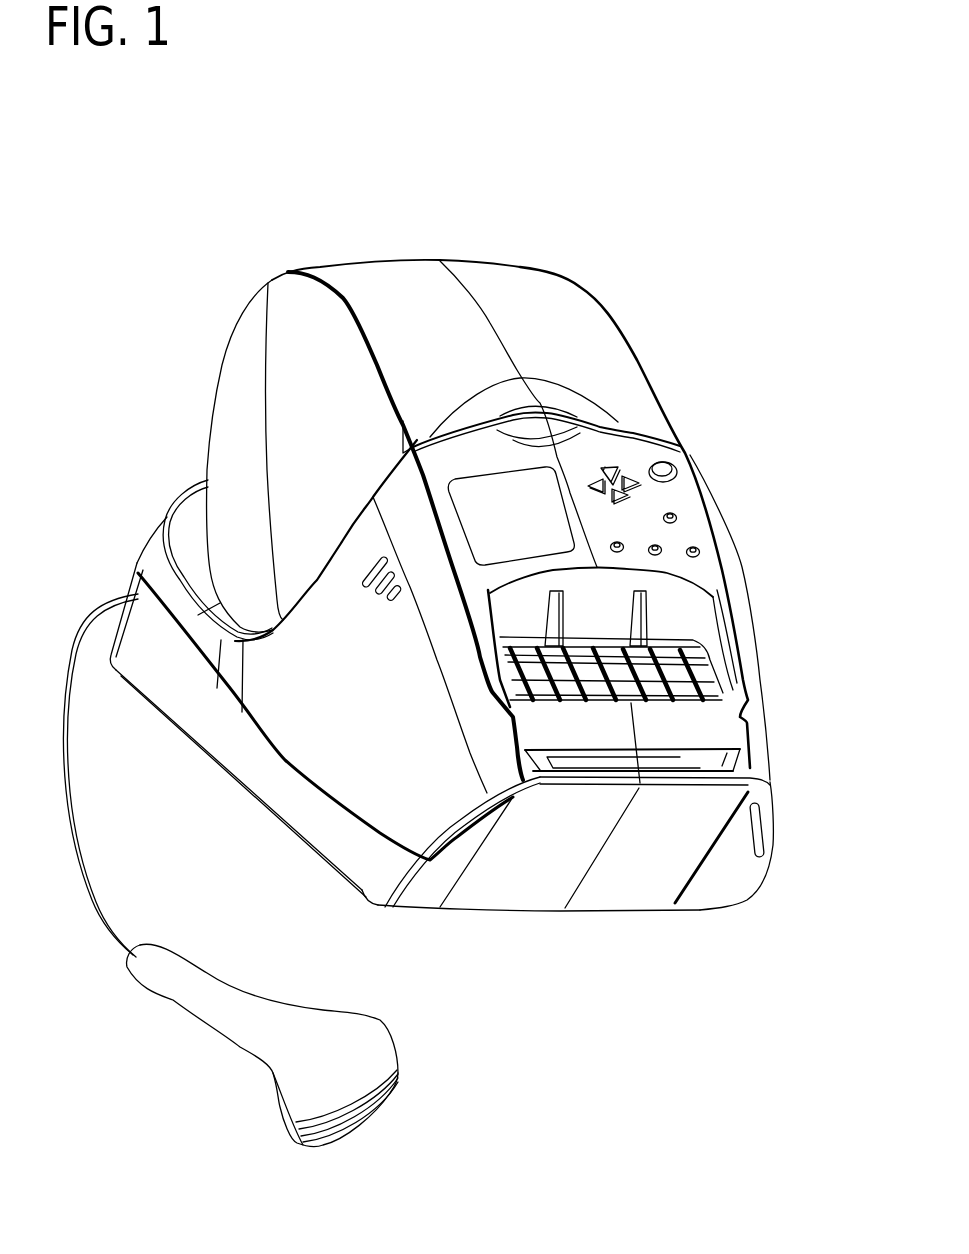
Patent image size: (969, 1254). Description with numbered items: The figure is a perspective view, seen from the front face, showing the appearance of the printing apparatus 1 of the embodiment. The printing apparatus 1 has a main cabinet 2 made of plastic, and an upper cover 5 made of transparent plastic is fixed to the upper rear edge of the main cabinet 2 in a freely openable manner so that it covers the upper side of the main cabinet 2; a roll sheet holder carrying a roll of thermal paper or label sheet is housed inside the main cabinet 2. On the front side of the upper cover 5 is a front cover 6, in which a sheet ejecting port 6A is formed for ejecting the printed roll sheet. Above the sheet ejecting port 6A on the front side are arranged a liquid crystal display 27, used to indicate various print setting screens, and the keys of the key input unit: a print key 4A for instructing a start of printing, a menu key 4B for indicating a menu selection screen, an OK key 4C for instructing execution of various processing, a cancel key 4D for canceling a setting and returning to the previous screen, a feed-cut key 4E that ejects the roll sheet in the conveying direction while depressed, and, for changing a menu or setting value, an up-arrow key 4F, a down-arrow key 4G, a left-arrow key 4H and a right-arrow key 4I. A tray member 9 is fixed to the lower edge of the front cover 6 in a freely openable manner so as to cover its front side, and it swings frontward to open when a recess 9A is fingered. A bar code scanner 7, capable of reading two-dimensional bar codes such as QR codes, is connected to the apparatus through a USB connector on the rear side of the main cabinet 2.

The printing apparatus 1 is at (517, 200).
The main cabinet 2 is at (300, 803).
The print key 4A is at (658, 467).
The menu key 4B is at (675, 512).
The OK key 4C is at (694, 546).
The cancel key 4D is at (658, 544).
The feed-cut key 4E is at (618, 541).
The up-arrow key 4F is at (610, 466).
The down-arrow key 4G is at (610, 491).
The left-arrow key 4H is at (587, 479).
The right-arrow key 4I is at (630, 478).
The upper cover 5 is at (583, 327).
The front cover 6 is at (663, 497).
The sheet ejecting port 6A is at (580, 637).
The bar code scanner 7 is at (372, 1022).
The tray member 9 is at (633, 873).
The recess 9A is at (665, 762).
The liquid crystal display (LCD) 27 is at (523, 518).